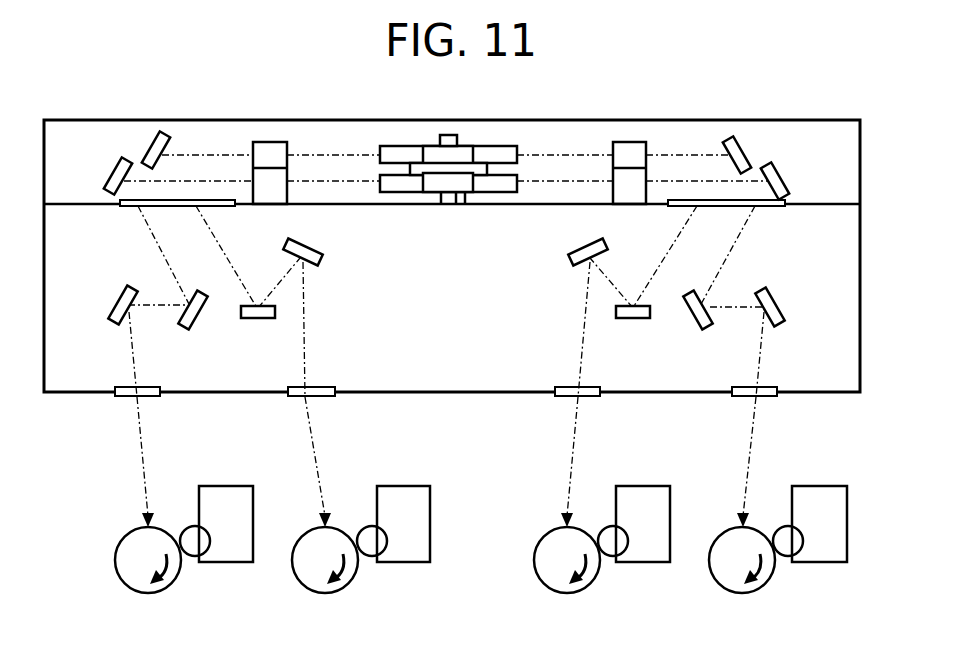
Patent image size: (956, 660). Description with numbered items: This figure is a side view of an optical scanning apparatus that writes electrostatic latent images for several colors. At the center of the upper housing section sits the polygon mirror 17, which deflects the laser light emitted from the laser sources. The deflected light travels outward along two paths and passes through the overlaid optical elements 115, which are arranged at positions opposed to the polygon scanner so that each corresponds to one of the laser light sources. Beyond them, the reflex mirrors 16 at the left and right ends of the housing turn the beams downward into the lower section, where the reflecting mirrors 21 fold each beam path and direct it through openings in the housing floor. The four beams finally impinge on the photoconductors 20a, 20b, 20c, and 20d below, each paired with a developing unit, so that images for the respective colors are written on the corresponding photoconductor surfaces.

The reflex mirror 16 is at (146, 152).
The optical element 115 is at (270, 142).
The polygon mirror 17 is at (467, 204).
The reflecting mirror 21 is at (118, 318).
The photoconductor 20a is at (120, 573).
The photoconductor 20b is at (296, 573).
The photoconductor 20c is at (538, 573).
The photoconductor 20d is at (713, 573).